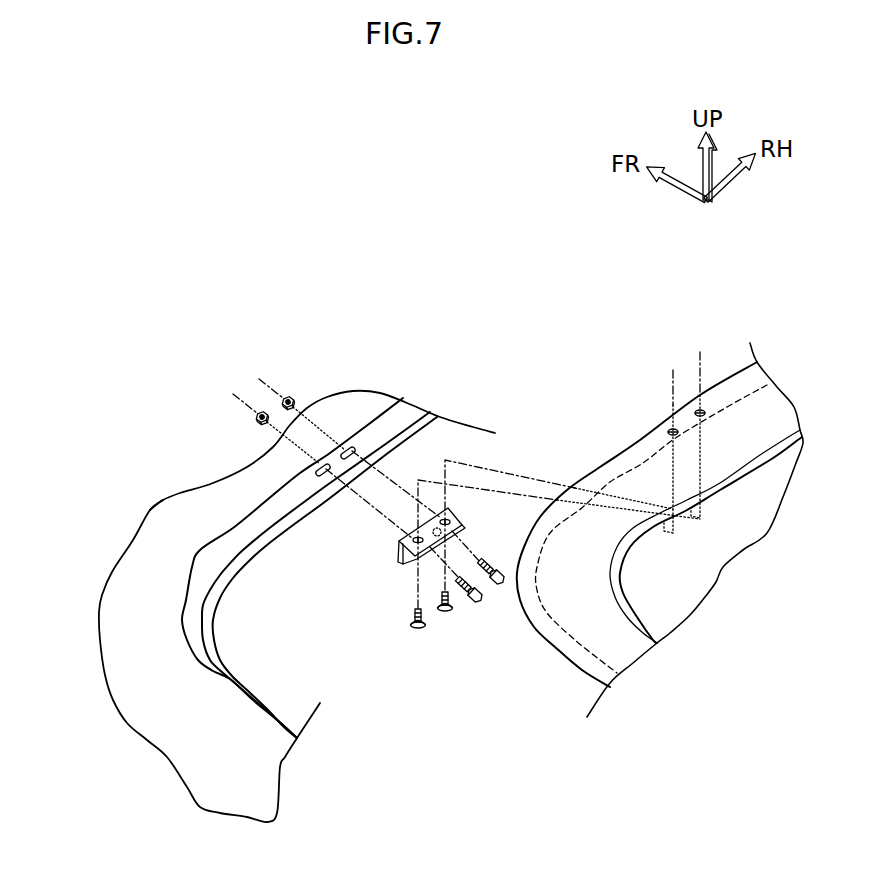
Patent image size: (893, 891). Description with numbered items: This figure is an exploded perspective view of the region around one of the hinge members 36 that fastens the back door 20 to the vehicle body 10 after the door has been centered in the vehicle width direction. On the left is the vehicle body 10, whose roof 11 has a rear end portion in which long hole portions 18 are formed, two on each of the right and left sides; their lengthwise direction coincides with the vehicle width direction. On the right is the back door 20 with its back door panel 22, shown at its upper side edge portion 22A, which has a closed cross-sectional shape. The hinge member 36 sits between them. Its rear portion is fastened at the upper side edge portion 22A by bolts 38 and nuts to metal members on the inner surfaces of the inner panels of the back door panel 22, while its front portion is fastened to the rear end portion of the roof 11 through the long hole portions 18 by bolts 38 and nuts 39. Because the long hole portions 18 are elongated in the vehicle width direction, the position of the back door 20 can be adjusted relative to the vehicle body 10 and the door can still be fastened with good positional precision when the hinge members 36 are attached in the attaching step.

The vehicle body 10 is at (175, 770).
The roof 11 is at (153, 557).
The long hole portions 18 is at (317, 476).
The back door 20 is at (727, 366).
The back door panel 22 is at (651, 506).
The upper side edge portion 22A is at (625, 460).
The hinge members 36 is at (397, 562).
The bolts 38 is at (445, 617).
The nuts 39 is at (262, 413).